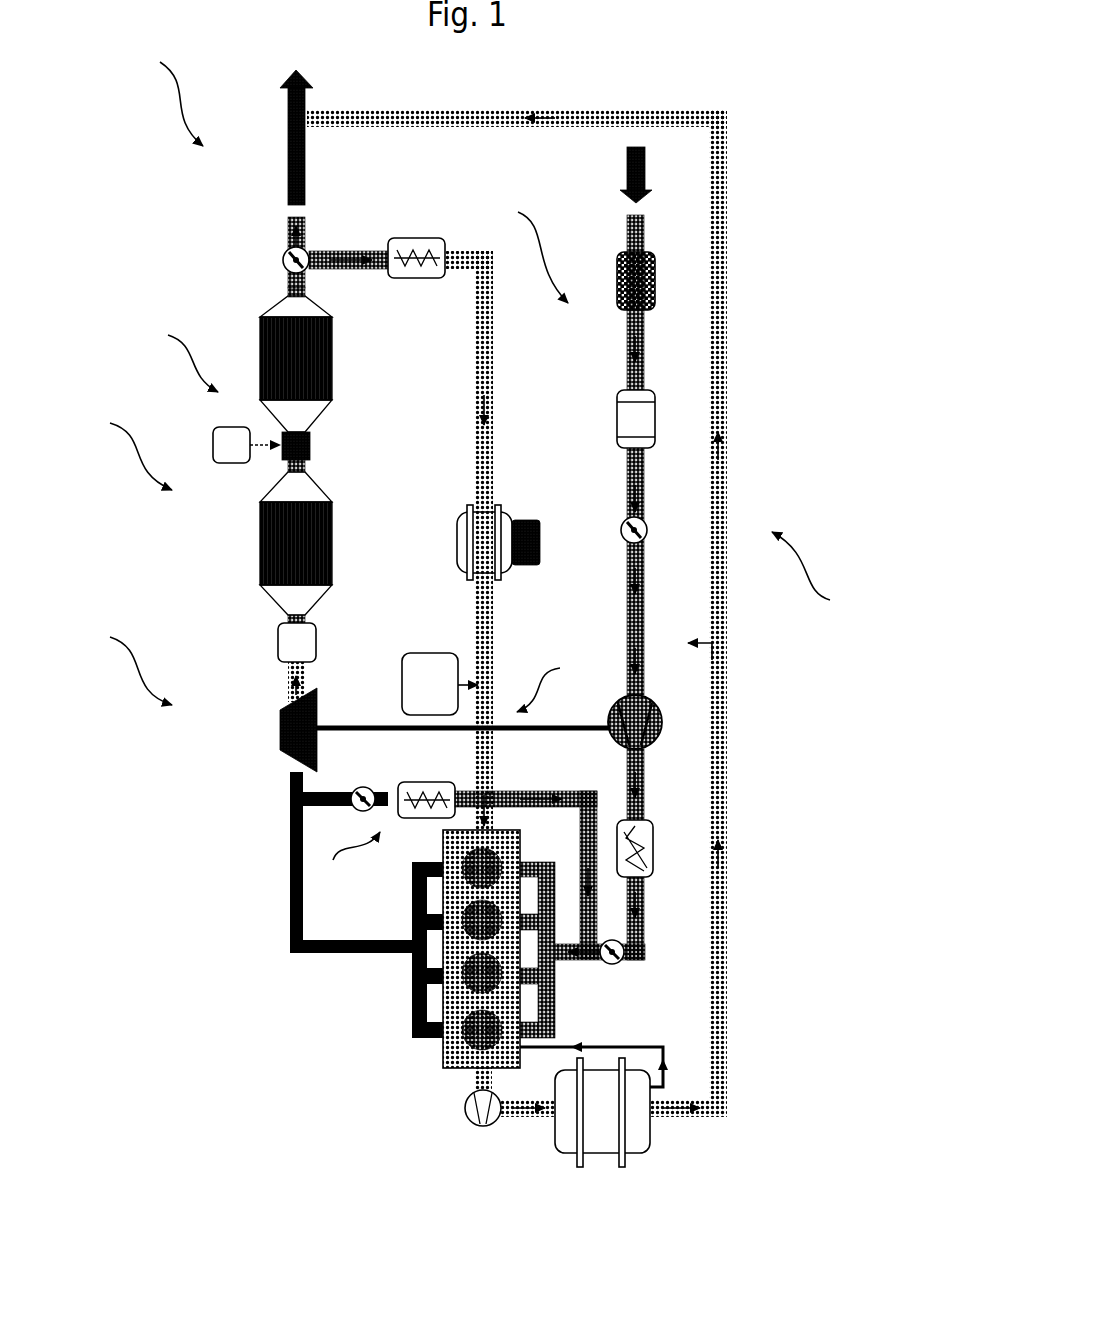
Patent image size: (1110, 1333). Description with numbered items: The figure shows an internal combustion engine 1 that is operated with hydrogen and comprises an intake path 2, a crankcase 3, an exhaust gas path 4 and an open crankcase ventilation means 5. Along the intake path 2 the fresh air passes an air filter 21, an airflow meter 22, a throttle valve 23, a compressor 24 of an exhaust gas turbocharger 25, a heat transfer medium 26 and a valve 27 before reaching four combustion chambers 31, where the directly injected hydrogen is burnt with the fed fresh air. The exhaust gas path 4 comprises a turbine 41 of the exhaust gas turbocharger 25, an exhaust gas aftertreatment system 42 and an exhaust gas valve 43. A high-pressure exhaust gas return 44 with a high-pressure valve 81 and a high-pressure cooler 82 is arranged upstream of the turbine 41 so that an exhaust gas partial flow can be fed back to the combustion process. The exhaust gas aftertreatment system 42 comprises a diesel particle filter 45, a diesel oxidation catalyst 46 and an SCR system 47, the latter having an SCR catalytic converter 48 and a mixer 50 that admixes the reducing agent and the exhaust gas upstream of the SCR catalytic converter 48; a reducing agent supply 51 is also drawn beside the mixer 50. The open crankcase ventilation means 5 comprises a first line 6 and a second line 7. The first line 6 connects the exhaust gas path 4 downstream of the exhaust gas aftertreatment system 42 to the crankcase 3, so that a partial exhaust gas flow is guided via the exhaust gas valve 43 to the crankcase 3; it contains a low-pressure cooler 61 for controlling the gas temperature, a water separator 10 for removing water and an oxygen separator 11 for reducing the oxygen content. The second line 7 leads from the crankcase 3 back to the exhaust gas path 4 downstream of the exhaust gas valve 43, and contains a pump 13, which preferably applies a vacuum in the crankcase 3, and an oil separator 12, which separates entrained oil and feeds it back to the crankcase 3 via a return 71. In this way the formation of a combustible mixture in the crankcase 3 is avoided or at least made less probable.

The internal combustion engine 1 is at (169, 81).
The intake path 2 is at (575, 553).
The crankcase 3 is at (443, 1062).
The exhaust gas path 4 is at (196, 387).
The open crankcase ventilation means 5 is at (817, 576).
The first line 6 is at (475, 408).
The second line 7 is at (730, 485).
The water separator 10 is at (458, 520).
The oxygen separator 11 is at (420, 655).
The oil separator 12 is at (603, 1163).
The pump 13 is at (483, 1127).
The air filter 21 is at (620, 255).
The airflow meter 22 is at (620, 440).
The throttle valve 23 is at (622, 540).
The compressor 24 is at (662, 735).
The exhaust gas turbocharger 25 is at (463, 681).
The heat transfer medium 26 is at (655, 870).
The valve 27 is at (620, 960).
The combustion chambers 31 is at (478, 1030).
The turbine 41 is at (280, 742).
The exhaust gas aftertreatment system 42 is at (117, 445).
The exhaust gas valve 43 is at (283, 262).
The high-pressure exhaust gas return 44 is at (347, 866).
The diesel particle filter 45 is at (278, 637).
The diesel oxidation catalyst 46 is at (260, 565).
The SCR system 47 is at (173, 352).
The SCR catalytic converter 48 is at (332, 348).
The mixer 50 is at (315, 442).
The reductant tank 51 is at (213, 440).
The low-pressure cooler 61 is at (402, 238).
The return 71 is at (665, 1047).
The high-pressure valve 81 is at (350, 805).
The high-pressure cooler 82 is at (397, 805).